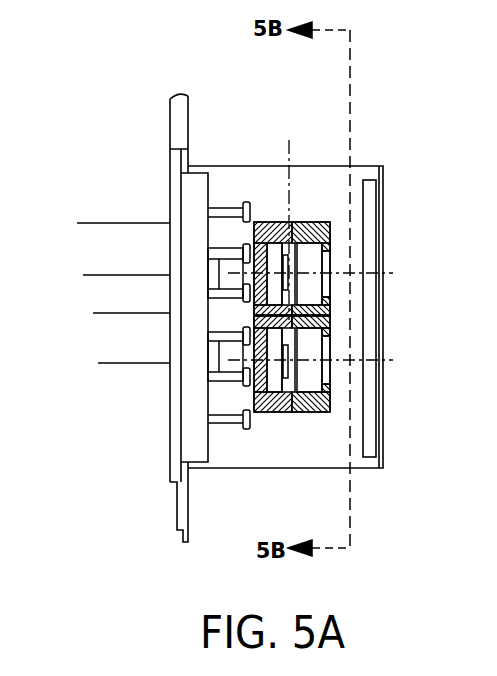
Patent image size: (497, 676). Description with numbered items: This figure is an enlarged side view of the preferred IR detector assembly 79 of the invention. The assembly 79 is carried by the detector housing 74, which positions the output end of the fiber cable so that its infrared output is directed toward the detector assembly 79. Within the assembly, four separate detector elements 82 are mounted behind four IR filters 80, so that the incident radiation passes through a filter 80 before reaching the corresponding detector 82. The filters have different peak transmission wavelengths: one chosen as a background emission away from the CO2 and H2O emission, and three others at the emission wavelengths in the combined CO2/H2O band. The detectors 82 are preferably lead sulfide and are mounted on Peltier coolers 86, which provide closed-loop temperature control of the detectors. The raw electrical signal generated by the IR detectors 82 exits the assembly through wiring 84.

The detector housing 74 is at (178, 518).
The IR detector assembly 79 is at (357, 143).
The IR filters 80 is at (312, 284).
The detector elements 82 is at (270, 412).
The wiring 84 is at (84, 306).
The Peltier coolers 86 is at (250, 363).